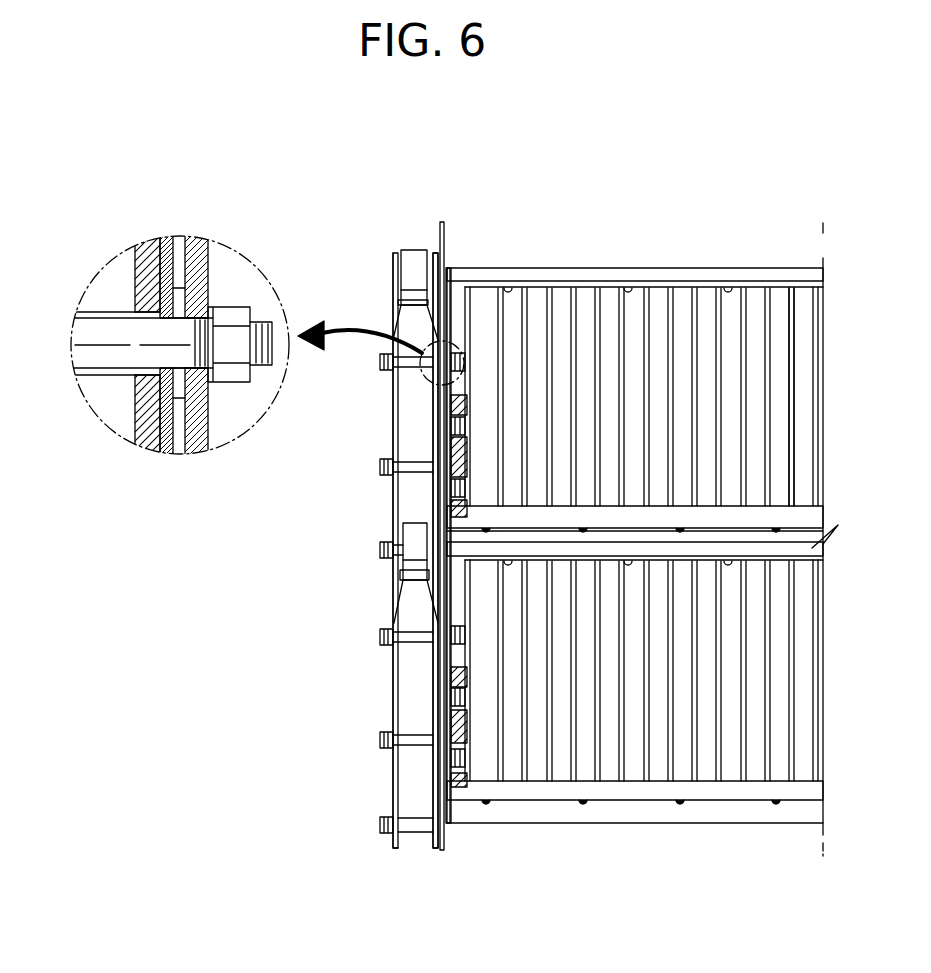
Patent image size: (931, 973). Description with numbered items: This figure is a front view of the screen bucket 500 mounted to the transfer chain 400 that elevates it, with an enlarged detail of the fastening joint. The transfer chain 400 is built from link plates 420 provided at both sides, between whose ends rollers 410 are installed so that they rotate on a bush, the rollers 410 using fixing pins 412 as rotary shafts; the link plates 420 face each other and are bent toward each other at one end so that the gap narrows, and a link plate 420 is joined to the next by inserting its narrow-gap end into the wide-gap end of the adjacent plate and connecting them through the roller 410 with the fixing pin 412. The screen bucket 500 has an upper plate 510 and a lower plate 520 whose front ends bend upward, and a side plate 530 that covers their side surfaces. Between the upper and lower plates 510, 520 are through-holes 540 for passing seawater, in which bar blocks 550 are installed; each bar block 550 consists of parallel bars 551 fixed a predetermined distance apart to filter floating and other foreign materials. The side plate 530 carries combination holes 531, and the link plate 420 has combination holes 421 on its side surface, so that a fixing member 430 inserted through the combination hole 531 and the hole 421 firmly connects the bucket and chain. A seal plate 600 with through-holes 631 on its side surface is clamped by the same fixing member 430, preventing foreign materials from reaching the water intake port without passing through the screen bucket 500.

The transfer chain 400 is at (342, 315).
The roller 410 is at (410, 268).
The fixing pin 412 is at (380, 551).
The link plate 420 is at (150, 258).
The combination hole 421 is at (132, 374).
The fixing member 430 is at (380, 467).
The screen bucket 500 is at (838, 332).
The upper plate 510 is at (622, 268).
The lower plate 520 is at (820, 507).
The side plate 530 is at (203, 260).
The combination hole 531 is at (208, 372).
The through-hole 540 is at (752, 303).
The bar block 550 is at (808, 630).
The parallel bar 551 is at (815, 447).
The seal plate 600 is at (440, 230).
The through-hole 631 is at (160, 314).